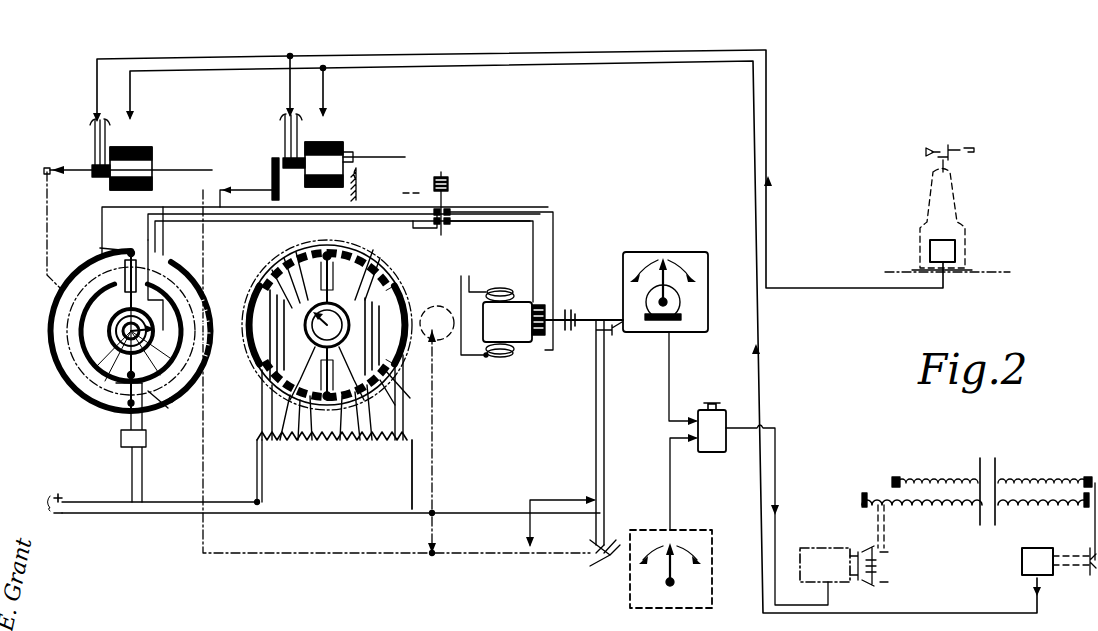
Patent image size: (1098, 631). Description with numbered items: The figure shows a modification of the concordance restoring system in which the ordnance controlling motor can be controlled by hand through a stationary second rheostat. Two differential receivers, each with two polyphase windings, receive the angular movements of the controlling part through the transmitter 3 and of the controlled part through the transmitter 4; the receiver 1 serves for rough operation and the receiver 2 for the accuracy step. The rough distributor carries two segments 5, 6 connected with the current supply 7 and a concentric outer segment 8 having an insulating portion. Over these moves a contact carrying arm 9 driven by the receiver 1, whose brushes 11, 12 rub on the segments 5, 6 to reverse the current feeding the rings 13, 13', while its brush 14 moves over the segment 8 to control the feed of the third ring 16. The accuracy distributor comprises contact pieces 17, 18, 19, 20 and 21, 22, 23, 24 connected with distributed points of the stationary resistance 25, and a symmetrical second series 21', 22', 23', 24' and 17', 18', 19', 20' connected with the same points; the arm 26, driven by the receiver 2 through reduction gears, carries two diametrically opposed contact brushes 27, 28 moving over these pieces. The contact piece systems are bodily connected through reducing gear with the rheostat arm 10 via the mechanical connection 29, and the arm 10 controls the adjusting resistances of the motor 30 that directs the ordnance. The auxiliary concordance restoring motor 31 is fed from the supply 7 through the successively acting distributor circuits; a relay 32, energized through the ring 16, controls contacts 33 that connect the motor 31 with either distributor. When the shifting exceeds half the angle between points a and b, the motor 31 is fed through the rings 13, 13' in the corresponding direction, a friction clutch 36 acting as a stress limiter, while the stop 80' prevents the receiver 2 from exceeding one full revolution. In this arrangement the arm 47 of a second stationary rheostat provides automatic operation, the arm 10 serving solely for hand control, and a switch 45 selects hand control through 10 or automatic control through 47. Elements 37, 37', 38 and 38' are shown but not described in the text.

The differential receiver 1 is at (172, 170).
The differential receiver 2 is at (404, 157).
The transmitter 3 is at (947, 208).
The transmitter 4 is at (1059, 561).
The segment 5 is at (95, 369).
The segment 6 is at (146, 398).
The current supply 7 is at (309, 478).
The segment 8 is at (83, 325).
The contact carrying arm 9 is at (160, 243).
The rheostat arm 10 is at (671, 521).
The brush 11 is at (122, 412).
The brush 12 is at (84, 313).
The ring 13 is at (110, 369).
The ring 13' is at (81, 334).
The brush 14 is at (100, 248).
The third ring 16 is at (168, 398).
The contact piece 17 is at (369, 264).
The contact piece 17' is at (321, 437).
The contact piece 18 is at (387, 304).
The contact piece 18' is at (281, 430).
The contact piece 19 is at (400, 306).
The contact piece 19' is at (255, 405).
The contact piece 20 is at (341, 313).
The contact piece 20' is at (249, 351).
The contact piece 21 is at (327, 258).
The contact piece 21' is at (327, 420).
The contact piece 22 is at (291, 266).
The contact piece 22' is at (377, 435).
The contact piece 23 is at (280, 272).
The contact piece 23' is at (421, 397).
The contact piece 24 is at (268, 283).
The contact piece 24' is at (425, 387).
The resistance 25 is at (332, 448).
The arm 26 is at (322, 370).
The contact brush 27 is at (318, 316).
The contact brush 28 is at (336, 380).
The mechanical connection 29 is at (556, 497).
The motor 30 is at (947, 522).
The auxiliary concordance restoring motor 31 is at (500, 309).
The relay 32 is at (448, 180).
The contacts 33 is at (452, 215).
The friction clutch 36 is at (570, 312).
The outer ring 37 is at (312, 325).
The auxiliary dial 37' is at (437, 312).
The upper brush 38 is at (324, 264).
The lower brush 38' is at (329, 391).
The switch 45 is at (763, 504).
The arm 47 is at (690, 256).
The stop 80' is at (367, 184).
The angle aob endpoint a is at (111, 328).
The angle aob endpoint b is at (189, 321).